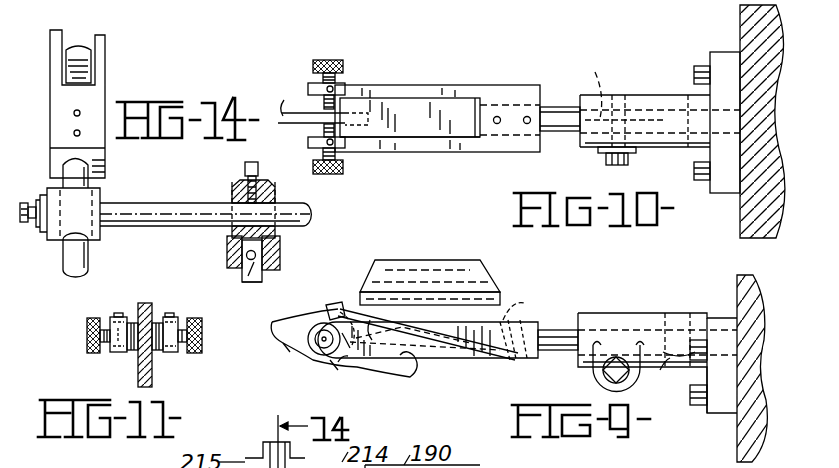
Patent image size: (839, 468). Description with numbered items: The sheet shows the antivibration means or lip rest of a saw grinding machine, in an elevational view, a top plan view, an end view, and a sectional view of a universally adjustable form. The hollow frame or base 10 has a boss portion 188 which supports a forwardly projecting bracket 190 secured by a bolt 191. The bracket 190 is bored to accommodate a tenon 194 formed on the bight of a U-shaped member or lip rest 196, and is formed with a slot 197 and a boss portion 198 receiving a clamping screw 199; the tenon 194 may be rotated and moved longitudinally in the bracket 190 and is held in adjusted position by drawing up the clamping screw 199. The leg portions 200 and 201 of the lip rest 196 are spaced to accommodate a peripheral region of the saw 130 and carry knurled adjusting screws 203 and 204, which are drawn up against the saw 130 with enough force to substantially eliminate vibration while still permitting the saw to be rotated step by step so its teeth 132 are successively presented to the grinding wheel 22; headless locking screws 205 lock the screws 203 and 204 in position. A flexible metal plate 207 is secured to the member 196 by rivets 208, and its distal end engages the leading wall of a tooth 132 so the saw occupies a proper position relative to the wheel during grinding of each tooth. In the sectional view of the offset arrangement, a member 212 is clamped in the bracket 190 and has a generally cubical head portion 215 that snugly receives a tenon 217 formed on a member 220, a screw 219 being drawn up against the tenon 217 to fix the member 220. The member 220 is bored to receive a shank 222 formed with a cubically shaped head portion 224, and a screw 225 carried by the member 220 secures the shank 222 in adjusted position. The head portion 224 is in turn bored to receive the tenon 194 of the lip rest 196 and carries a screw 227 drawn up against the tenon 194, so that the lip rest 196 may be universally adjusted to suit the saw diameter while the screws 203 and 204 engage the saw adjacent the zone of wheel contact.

In FIG. 10, the frame or base 10 is at (738, 32).
In FIG. 9, the frame or base 10 is at (755, 280).
In FIG. 9, the grinding wheel 22 is at (478, 296).
In FIG. 10, the saw 130 is at (320, 91).
In FIG. 11, the saw 130 is at (152, 306).
In FIG. 9, the teeth 132 is at (338, 310).
In FIG. 10, the boss portion 188 is at (745, 224).
In FIG. 9, the boss portion 188 is at (740, 440).
In FIG. 10, the bracket 190 is at (668, 74).
In FIG. 9, the bracket 190 is at (628, 314).
In FIG. 9, the bolt 191 is at (695, 370).
In FIG. 14, the tenon 194 is at (80, 256).
In FIG. 10, the tenon 194 is at (550, 105).
In FIG. 9, the tenon 194 is at (560, 330).
In FIG. 14, the U-shaped member or lip rest 196 is at (100, 92).
In FIG. 10, the U-shaped member or lip rest 196 is at (470, 152).
In FIG. 9, the U-shaped member or lip rest 196 is at (455, 356).
In FIG. 10, the slot 197 is at (581, 81).
In FIG. 10, the boss portion 198 is at (602, 154).
In FIG. 10, the clamping screw 199 is at (628, 160).
In FIG. 9, the clamping screw 199 is at (606, 378).
In FIG. 10, the leg portion 200 is at (402, 52).
In FIG. 11, the leg portion 200 is at (118, 354).
In FIG. 10, the leg portion 201 is at (383, 140).
In FIG. 11, the leg portion 201 is at (168, 354).
In FIG. 10, the knurled adjusting screw 203 is at (344, 44).
In FIG. 11, the knurled adjusting screw 203 is at (90, 350).
In FIG. 10, the knurled adjusting screw 204 is at (343, 168).
In FIG. 9, the knurled adjusting screw 204 is at (318, 346).
In FIG. 11, the knurled adjusting screw 204 is at (193, 354).
In FIG. 10, the headless locking screw 205 is at (395, 68).
In FIG. 11, the headless locking screw 205 is at (120, 316).
In FIG. 14, the plate 207 is at (80, 46).
In FIG. 10, the plate 207 is at (408, 112).
In FIG. 9, the plate 207 is at (344, 304).
In FIG. 9, the rivets 208 is at (514, 338).
In FIG. 14, the member 212 is at (280, 242).
In FIG. 14, the head portion 215 is at (227, 239).
In FIG. 14, the tenon 217 is at (244, 256).
In FIG. 14, the screw 219 is at (241, 280).
In FIG. 14, the member 220 is at (276, 194).
In FIG. 14, the shank or tenon 222 is at (210, 203).
In FIG. 14, the head portion 224 is at (96, 202).
In FIG. 14, the screw 225 is at (243, 165).
In FIG. 14, the screw 227 is at (22, 222).